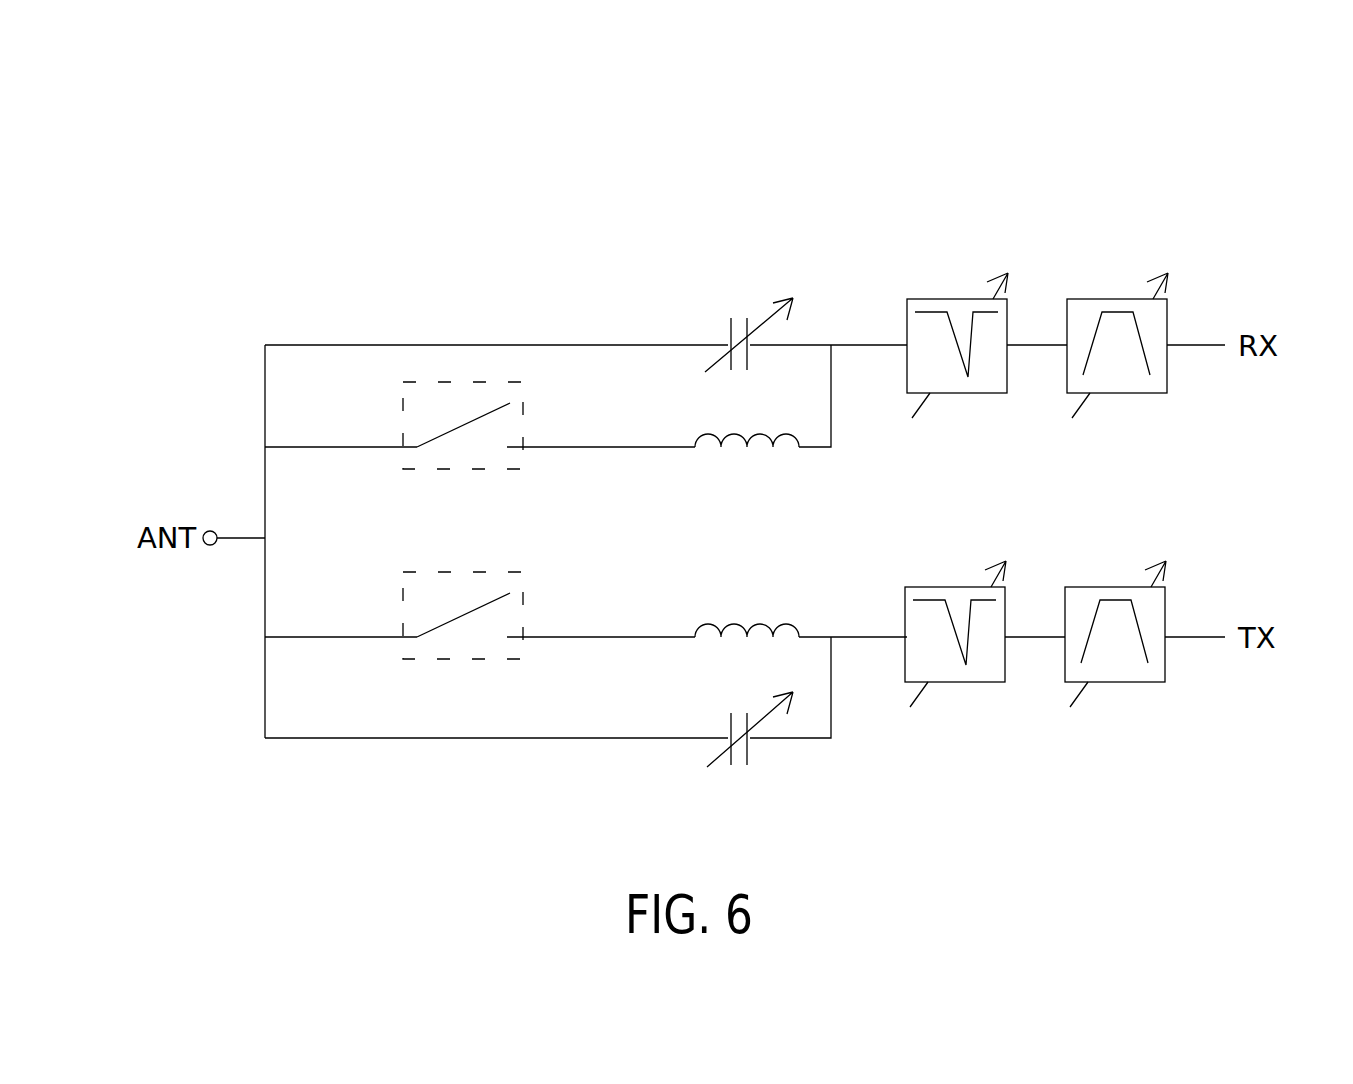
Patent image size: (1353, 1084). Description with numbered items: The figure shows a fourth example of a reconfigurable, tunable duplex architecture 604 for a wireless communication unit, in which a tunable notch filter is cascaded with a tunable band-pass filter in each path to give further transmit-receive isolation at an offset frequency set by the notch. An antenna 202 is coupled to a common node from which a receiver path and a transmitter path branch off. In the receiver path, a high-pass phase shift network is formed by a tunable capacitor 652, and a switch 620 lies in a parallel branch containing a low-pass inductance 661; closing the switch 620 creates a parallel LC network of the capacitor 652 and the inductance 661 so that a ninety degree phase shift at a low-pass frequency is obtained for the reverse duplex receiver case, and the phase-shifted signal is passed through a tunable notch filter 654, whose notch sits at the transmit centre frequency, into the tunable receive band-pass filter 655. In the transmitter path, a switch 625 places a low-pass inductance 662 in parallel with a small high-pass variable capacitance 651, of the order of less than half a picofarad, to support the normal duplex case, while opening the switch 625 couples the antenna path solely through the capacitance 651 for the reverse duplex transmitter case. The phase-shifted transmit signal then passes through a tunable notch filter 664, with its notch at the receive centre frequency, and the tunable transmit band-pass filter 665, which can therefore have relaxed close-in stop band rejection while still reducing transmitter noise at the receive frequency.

The reconfigurable duplex architecture 604 is at (1100, 157).
The antenna 202 is at (241, 537).
The switch 620 is at (405, 393).
The switch 625 is at (405, 583).
The tunable capacitor 652 is at (723, 331).
The high-pass variable capacitance 651 is at (753, 747).
The low-pass inductance 661 is at (707, 451).
The low-pass inductance 662 is at (707, 641).
The tunable notch filter 654 is at (930, 299).
The tunable receive band-pass filter 655 is at (1090, 299).
The tunable notch filter 664 is at (955, 682).
The tunable transmit band-pass filter 665 is at (1113, 682).